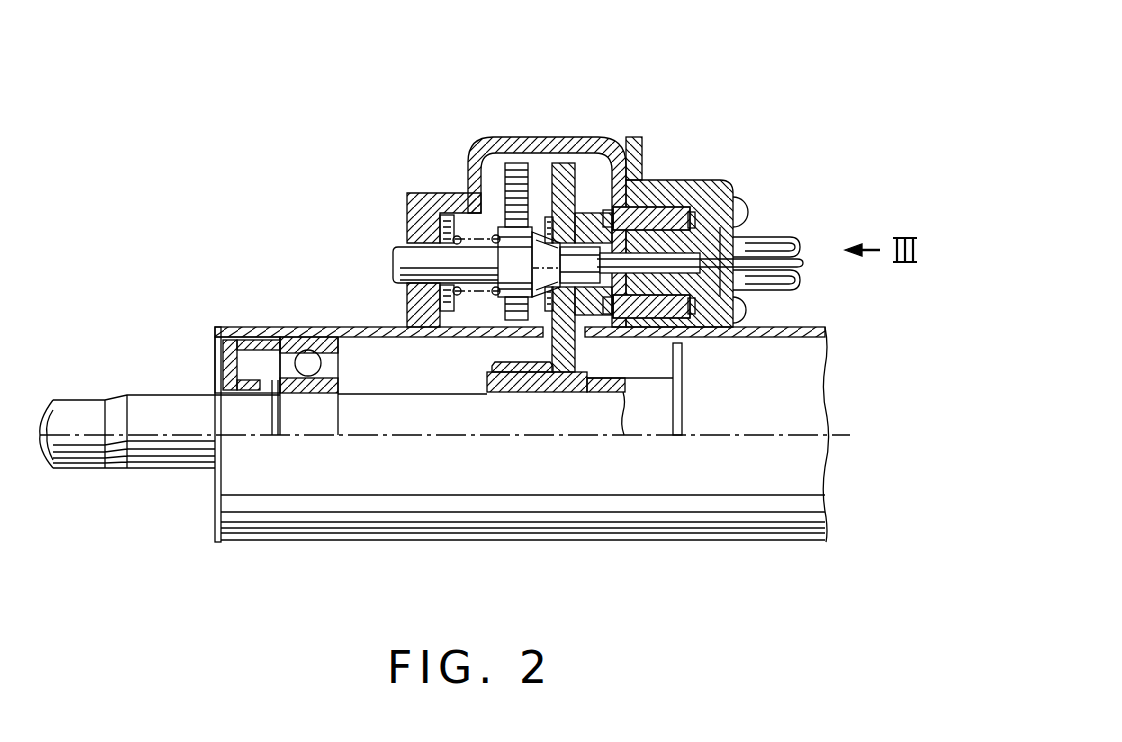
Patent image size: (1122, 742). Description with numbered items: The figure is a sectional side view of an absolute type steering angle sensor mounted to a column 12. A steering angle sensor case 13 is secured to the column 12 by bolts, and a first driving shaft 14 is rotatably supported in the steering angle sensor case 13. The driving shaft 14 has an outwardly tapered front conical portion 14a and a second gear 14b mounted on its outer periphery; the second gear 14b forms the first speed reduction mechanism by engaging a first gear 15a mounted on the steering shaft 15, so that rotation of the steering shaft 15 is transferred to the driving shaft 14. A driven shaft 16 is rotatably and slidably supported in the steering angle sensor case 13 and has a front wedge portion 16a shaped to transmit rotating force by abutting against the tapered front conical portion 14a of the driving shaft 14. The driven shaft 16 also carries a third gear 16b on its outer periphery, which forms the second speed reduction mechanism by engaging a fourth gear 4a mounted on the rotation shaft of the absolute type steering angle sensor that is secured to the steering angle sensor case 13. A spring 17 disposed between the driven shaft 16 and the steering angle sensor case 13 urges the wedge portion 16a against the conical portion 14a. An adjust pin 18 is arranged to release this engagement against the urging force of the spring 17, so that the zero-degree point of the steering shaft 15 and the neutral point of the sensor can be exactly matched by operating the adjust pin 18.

The column 12 is at (517, 548).
The steering angle sensor case 13 is at (476, 140).
The first driving shaft 14 is at (653, 212).
The tapered front conical portion 14a is at (549, 214).
The second gear 14b is at (571, 200).
The steering shaft 15 is at (154, 478).
The first gear 15a is at (488, 377).
The driven shaft 16 is at (393, 263).
The front wedge portion 16a is at (546, 297).
The third gear 16b is at (497, 232).
The spring 17 is at (443, 200).
The adjust pin 18 is at (753, 262).
The fourth gear 4a is at (514, 175).